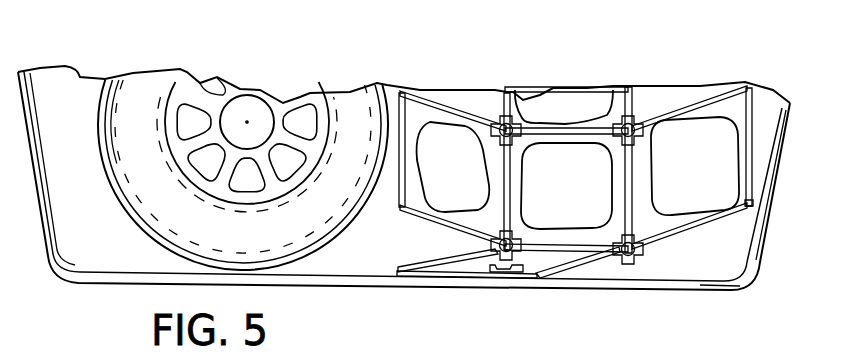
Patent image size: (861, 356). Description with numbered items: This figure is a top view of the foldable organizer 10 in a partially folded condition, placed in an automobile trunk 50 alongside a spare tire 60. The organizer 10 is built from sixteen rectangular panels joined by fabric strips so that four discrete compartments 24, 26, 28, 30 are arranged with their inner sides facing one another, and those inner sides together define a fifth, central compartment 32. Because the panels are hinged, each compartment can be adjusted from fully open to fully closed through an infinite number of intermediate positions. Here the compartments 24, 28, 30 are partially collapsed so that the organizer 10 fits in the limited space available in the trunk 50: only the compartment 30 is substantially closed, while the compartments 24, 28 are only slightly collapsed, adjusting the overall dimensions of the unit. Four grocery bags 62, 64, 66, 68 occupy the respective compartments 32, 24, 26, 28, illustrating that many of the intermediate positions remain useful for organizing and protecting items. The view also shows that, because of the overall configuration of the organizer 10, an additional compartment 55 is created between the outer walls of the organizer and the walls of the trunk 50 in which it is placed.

The foldable organizer 10 is at (683, 100).
The compartment 24 is at (465, 182).
The compartment 26 is at (583, 115).
The compartment 28 is at (703, 172).
The compartment 30 is at (470, 268).
The fifth compartment 32 is at (575, 195).
The automobile trunk 50 is at (782, 143).
The additional compartment 55 is at (733, 258).
The spare tire 60 is at (253, 107).
The grocery bag 62 is at (580, 238).
The grocery bag 64 is at (423, 223).
The grocery bag 66 is at (618, 92).
The grocery bag 68 is at (737, 167).